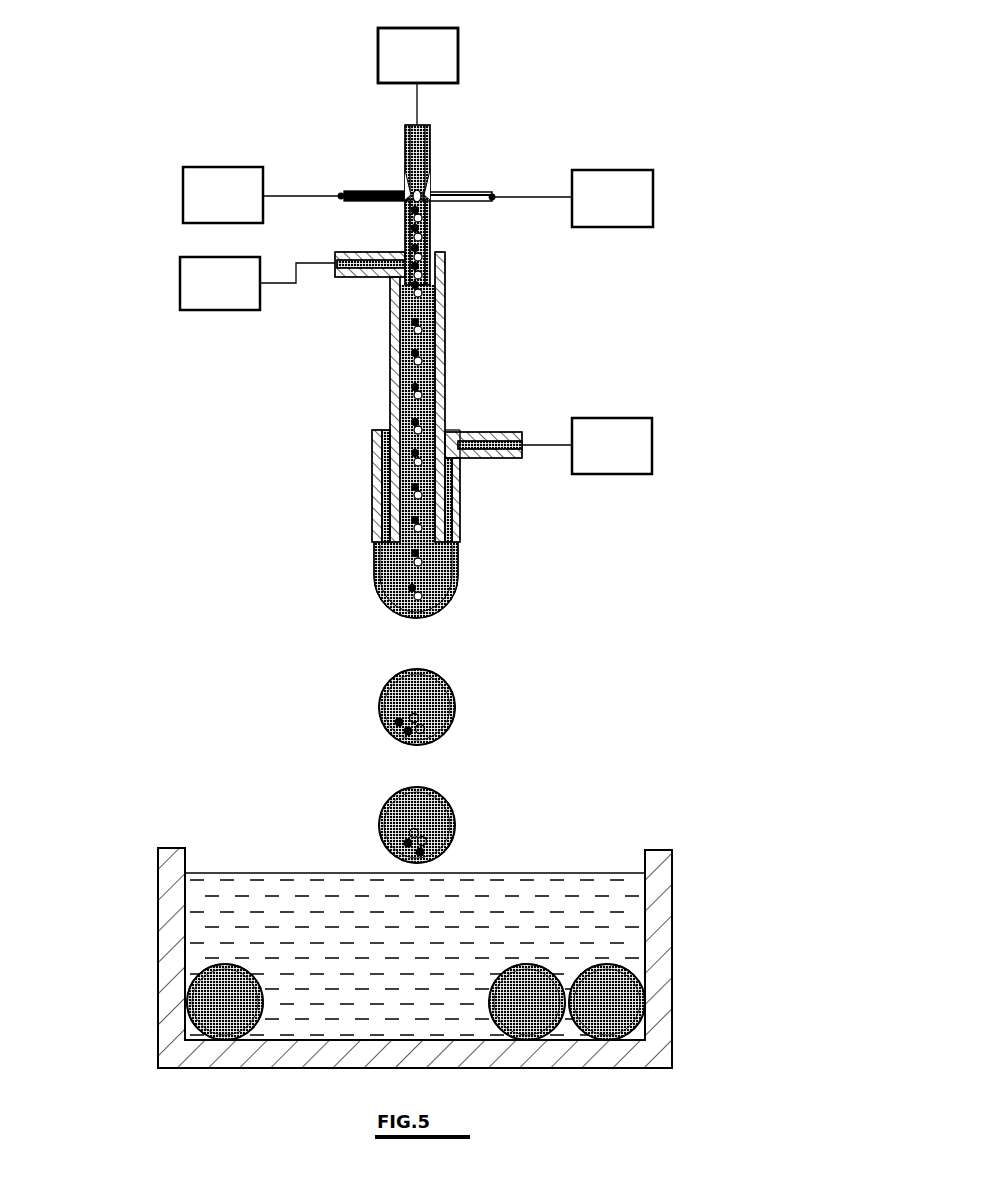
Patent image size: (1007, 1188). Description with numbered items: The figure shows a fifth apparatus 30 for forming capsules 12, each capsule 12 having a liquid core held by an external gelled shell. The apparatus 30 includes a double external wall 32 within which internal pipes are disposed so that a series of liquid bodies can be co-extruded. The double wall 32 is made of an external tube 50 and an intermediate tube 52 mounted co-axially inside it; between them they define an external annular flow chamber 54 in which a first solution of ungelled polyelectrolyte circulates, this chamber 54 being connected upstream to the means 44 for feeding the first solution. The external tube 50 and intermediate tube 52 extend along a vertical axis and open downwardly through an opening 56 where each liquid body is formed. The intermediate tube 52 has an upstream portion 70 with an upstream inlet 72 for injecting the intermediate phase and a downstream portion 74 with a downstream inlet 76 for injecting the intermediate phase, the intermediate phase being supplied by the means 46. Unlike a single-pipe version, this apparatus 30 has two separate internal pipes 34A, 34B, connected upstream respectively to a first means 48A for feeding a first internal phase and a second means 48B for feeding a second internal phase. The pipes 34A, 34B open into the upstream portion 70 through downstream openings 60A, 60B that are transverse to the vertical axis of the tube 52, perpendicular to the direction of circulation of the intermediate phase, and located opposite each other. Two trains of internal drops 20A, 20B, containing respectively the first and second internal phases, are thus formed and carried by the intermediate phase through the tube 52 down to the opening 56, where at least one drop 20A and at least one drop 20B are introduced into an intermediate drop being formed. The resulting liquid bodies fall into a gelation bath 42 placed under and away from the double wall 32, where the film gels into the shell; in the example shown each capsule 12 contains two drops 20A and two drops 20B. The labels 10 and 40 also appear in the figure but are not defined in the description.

The droplet generation system 10 is at (240, 798).
The capsule 12 is at (617, 955).
The first internal drop 20A is at (420, 360).
The second internal drop 20B is at (400, 352).
The apparatus 30 is at (577, 70).
The double external wall 32 is at (343, 472).
The first internal pipe 34A is at (358, 190).
The second internal pipe 34B is at (474, 190).
The container 40 is at (130, 862).
The gelation bath 42 is at (605, 865).
The means for feeding the first solution 44 is at (614, 425).
The means for feeding the intermediate phase 46 is at (390, 58).
The first means for feeding a first internal phase 48A is at (220, 178).
The second means for feeding a second internal phase 48B is at (613, 178).
The external tube 50 is at (372, 510).
The intermediate tube 52 is at (452, 298).
The external annular flow chamber 54 is at (440, 505).
The opening 56 is at (425, 545).
The first downstream opening 60A is at (405, 175).
The second downstream opening 60B is at (430, 165).
The upstream portion 70 is at (405, 230).
The upstream inlet 72 is at (405, 130).
The downstream portion 74 is at (440, 405).
The downstream inlet 76 is at (362, 278).